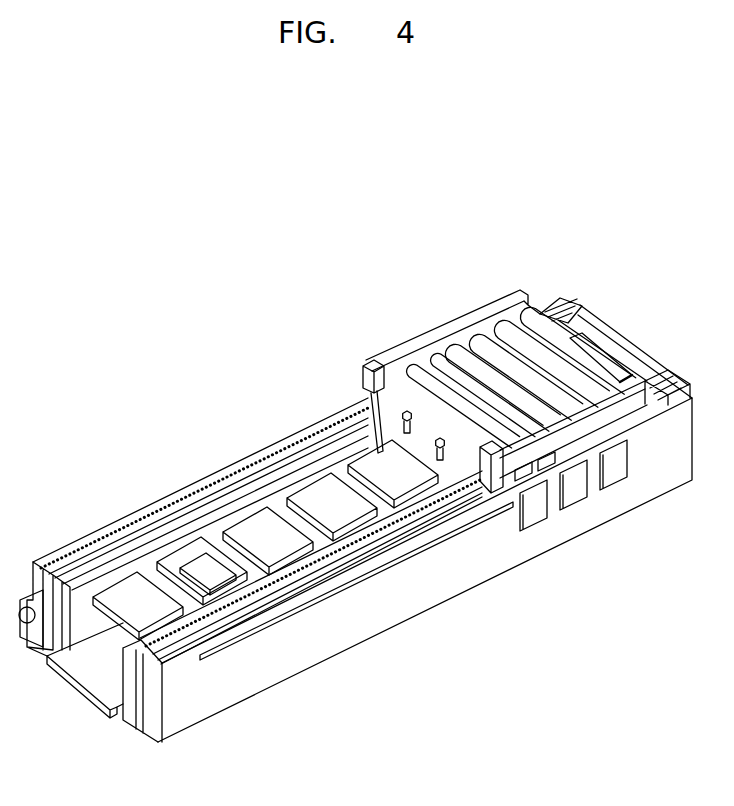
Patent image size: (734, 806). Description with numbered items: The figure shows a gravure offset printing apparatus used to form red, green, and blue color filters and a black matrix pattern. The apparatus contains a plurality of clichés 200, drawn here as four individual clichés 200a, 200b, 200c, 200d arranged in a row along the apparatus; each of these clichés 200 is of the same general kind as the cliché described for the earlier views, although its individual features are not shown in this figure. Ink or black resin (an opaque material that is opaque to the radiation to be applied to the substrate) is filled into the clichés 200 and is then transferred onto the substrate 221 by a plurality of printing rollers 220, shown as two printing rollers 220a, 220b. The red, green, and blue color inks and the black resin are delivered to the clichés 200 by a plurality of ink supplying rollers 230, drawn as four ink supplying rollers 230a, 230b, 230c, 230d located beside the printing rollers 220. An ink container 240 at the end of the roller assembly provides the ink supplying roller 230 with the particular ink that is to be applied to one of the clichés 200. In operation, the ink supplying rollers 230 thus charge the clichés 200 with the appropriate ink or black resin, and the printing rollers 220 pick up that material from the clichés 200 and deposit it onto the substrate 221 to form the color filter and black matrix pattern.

The clichés 200 is at (294, 361).
The cliché 200a is at (367, 452).
The cliché 200b is at (313, 485).
The cliché 200c is at (247, 517).
The cliché 200d is at (187, 552).
The printing rollers 220 is at (383, 275).
The printing roller 220a is at (371, 388).
The printing roller 220b is at (430, 362).
The substrate 221 is at (120, 580).
The ink supplying rollers 230 is at (541, 195).
The ink supplying roller 230a is at (503, 328).
The ink supplying roller 230b is at (477, 341).
The ink supplying roller 230c is at (450, 342).
The ink supplying roller 230d is at (531, 316).
The ink container 240 is at (613, 367).